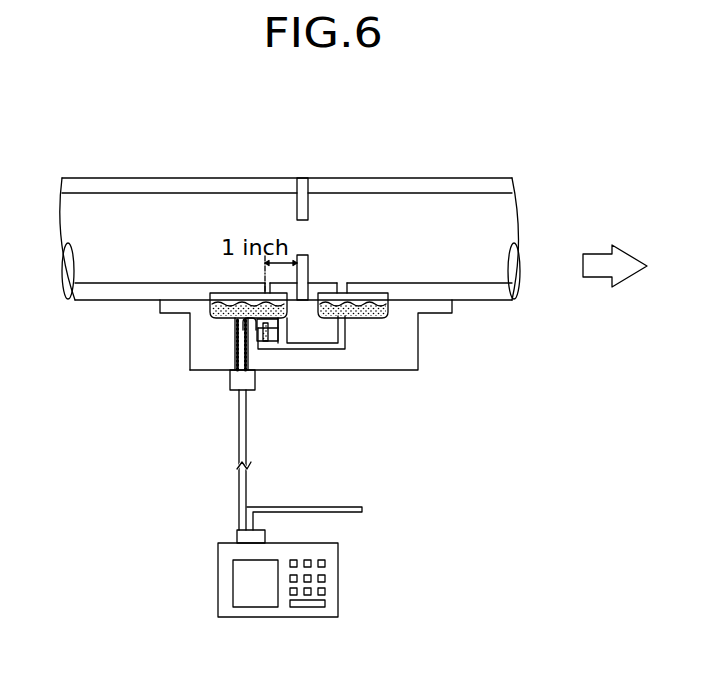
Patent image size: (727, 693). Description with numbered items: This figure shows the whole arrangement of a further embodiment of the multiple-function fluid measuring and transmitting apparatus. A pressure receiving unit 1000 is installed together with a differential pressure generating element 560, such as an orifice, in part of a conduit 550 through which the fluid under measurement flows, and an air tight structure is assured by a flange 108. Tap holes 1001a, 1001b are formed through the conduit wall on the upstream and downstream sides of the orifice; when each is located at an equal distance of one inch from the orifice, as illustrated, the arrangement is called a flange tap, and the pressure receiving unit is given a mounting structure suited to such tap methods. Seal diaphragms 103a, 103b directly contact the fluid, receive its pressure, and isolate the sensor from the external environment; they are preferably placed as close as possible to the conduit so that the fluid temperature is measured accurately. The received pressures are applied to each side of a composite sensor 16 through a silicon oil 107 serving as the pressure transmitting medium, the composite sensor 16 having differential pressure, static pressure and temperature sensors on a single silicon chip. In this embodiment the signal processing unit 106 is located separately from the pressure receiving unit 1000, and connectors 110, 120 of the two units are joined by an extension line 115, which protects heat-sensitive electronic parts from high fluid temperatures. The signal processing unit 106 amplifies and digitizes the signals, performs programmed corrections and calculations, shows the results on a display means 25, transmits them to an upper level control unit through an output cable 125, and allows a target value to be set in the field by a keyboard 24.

The conduit 550 is at (147, 177).
The differential pressure generating element 560 is at (305, 178).
The tap hole 1001b is at (262, 292).
The tap hole 1001a is at (344, 290).
The seal diaphragm 103b is at (222, 300).
The seal diaphragm 103a is at (352, 297).
The silicon oil 107 is at (380, 297).
The flange 108 is at (172, 316).
The pressure receiving unit 1000 is at (418, 372).
The composite sensor 16 is at (285, 320).
The connector 110 is at (228, 386).
The extension line 115 is at (237, 483).
The output cable 125 is at (323, 508).
The connector 120 is at (238, 518).
The signal processing unit 106 is at (338, 606).
The display means 25 is at (243, 590).
The keyboard 24 is at (331, 563).